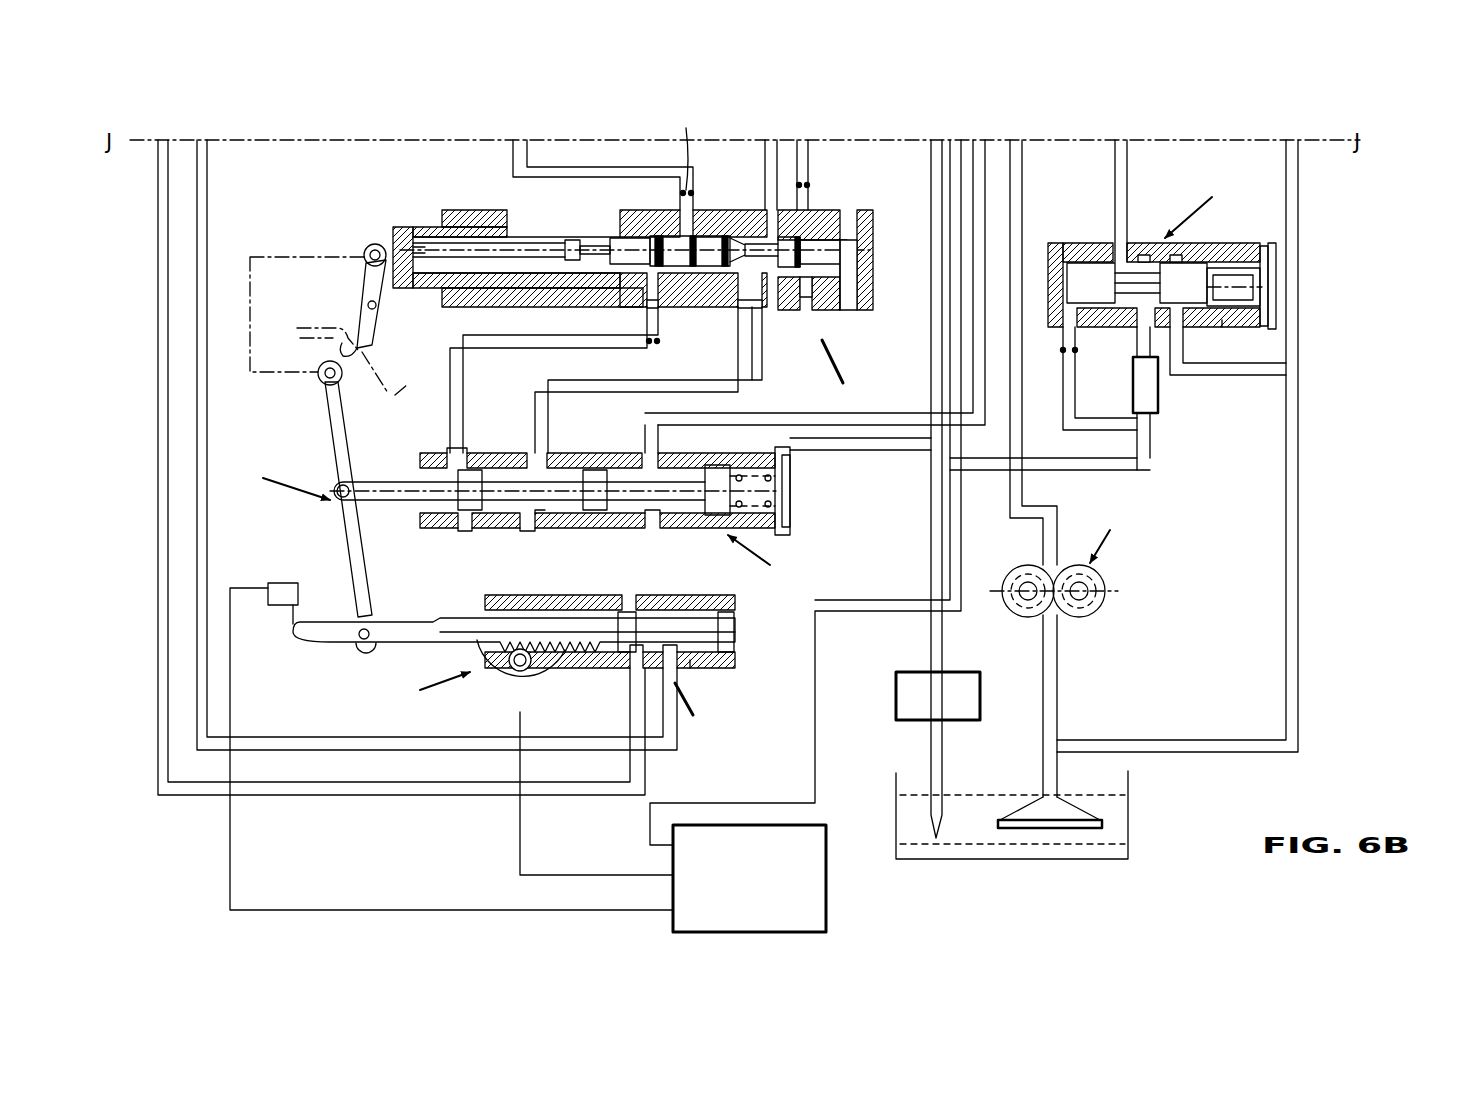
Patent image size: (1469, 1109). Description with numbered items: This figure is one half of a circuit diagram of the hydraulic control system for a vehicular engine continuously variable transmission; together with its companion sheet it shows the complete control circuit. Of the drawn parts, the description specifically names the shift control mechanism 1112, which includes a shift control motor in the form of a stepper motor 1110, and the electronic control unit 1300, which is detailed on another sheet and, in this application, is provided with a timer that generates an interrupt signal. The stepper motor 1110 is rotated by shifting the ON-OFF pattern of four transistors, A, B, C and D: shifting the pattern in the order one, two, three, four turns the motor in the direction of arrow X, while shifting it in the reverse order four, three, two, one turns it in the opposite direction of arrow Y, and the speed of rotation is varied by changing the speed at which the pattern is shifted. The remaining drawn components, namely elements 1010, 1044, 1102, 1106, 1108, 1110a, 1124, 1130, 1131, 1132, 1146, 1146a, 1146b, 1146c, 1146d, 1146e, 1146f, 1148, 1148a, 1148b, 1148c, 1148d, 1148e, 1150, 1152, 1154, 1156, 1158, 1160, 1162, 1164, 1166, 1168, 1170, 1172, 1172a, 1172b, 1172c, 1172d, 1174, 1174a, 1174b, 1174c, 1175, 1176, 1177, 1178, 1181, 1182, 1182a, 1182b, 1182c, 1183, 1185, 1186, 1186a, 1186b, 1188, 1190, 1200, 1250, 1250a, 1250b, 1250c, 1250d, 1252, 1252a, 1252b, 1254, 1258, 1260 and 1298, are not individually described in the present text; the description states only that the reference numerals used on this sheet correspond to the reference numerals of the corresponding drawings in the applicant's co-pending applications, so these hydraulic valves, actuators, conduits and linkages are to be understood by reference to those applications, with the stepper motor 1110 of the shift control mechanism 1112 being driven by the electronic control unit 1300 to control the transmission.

The peristaltic pump rollers 1010 is at (1071, 560).
The dashed actuating path 1044 is at (351, 326).
The valve assembly 1102 is at (815, 282).
The actuator cylinder assembly 1106 is at (766, 559).
The rack actuator assembly 1108 is at (706, 710).
The stepper motor 1110 is at (518, 757).
The pinion gear 1110a is at (510, 670).
The shift control mechanism 1112 is at (267, 483).
The valve 1124 is at (1214, 204).
The lubricant reservoir 1130 is at (1128, 840).
The valve head 1131 is at (1060, 830).
The supply line 1132 is at (1022, 185).
The valve housing 1146 is at (740, 238).
The housing port 1146a is at (640, 307).
The housing port 1146b is at (688, 338).
The housing port 1146c is at (745, 320).
The housing passage 1146d is at (754, 315).
The housing port 1146e is at (810, 300).
The housing chamber 1146f is at (848, 280).
The valve piston 1148 is at (850, 248).
The piston seal 1148a is at (655, 240).
The piston seal 1148b is at (690, 240).
The piston seal 1148c is at (722, 240).
The piston seal 1148d is at (798, 235).
The end cap 1148e is at (830, 224).
The cylinder body 1150 is at (410, 227).
The piston rod 1152 is at (518, 232).
The piston 1154 is at (535, 250).
The lever hook 1156 is at (368, 333).
The lever 1158 is at (380, 298).
The conduit 1160 is at (485, 360).
The supply conduit 1162 is at (513, 150).
The conduit 1164 is at (930, 190).
The conduit 1166 is at (640, 341).
The conduit 1168 is at (683, 151).
The conduit 1170 is at (800, 180).
The cylinder housing 1172 is at (485, 528).
The housing port 1172a is at (458, 530).
The housing port 1172b is at (522, 530).
The housing port 1172c is at (545, 528).
The housing port 1172d is at (655, 528).
The piston rod 1174 is at (395, 482).
The piston land 1174a is at (457, 450).
The piston land 1174b is at (541, 453).
The piston 1174c is at (790, 490).
The end plate 1175 is at (755, 532).
The conduit 1176 is at (948, 405).
The conduit 1177 is at (648, 425).
The link 1178 is at (350, 528).
The pivot pin 1181 is at (338, 484).
The rack bar 1182 is at (415, 642).
The rack piston 1182a is at (626, 612).
The rack piston end 1182b is at (734, 630).
The housing port 1182c is at (640, 668).
The pivot 1183 is at (370, 247).
The pivot pin 1185 is at (358, 640).
The rack housing 1186 is at (735, 600).
The housing port 1186a is at (636, 670).
The housing port 1186b is at (700, 668).
The return conduit 1188 is at (335, 798).
The return conduit 1190 is at (207, 190).
The return line 1200 is at (1150, 738).
The valve body 1250 is at (1262, 265).
The valve spool land 1250a is at (1068, 262).
The spool stem 1250b is at (1125, 255).
The valve spool land 1250c is at (1170, 246).
The end plate 1250d is at (1270, 250).
The spring cup 1252 is at (1225, 283).
The valve port 1252a is at (1080, 312).
The valve port 1252b is at (1188, 335).
The valve port 1254 is at (1222, 320).
The conduit 1258 is at (1122, 380).
The restrictor 1260 is at (1158, 413).
The sensor switch 1298 is at (283, 583).
The electronic control unit 1300 is at (827, 920).